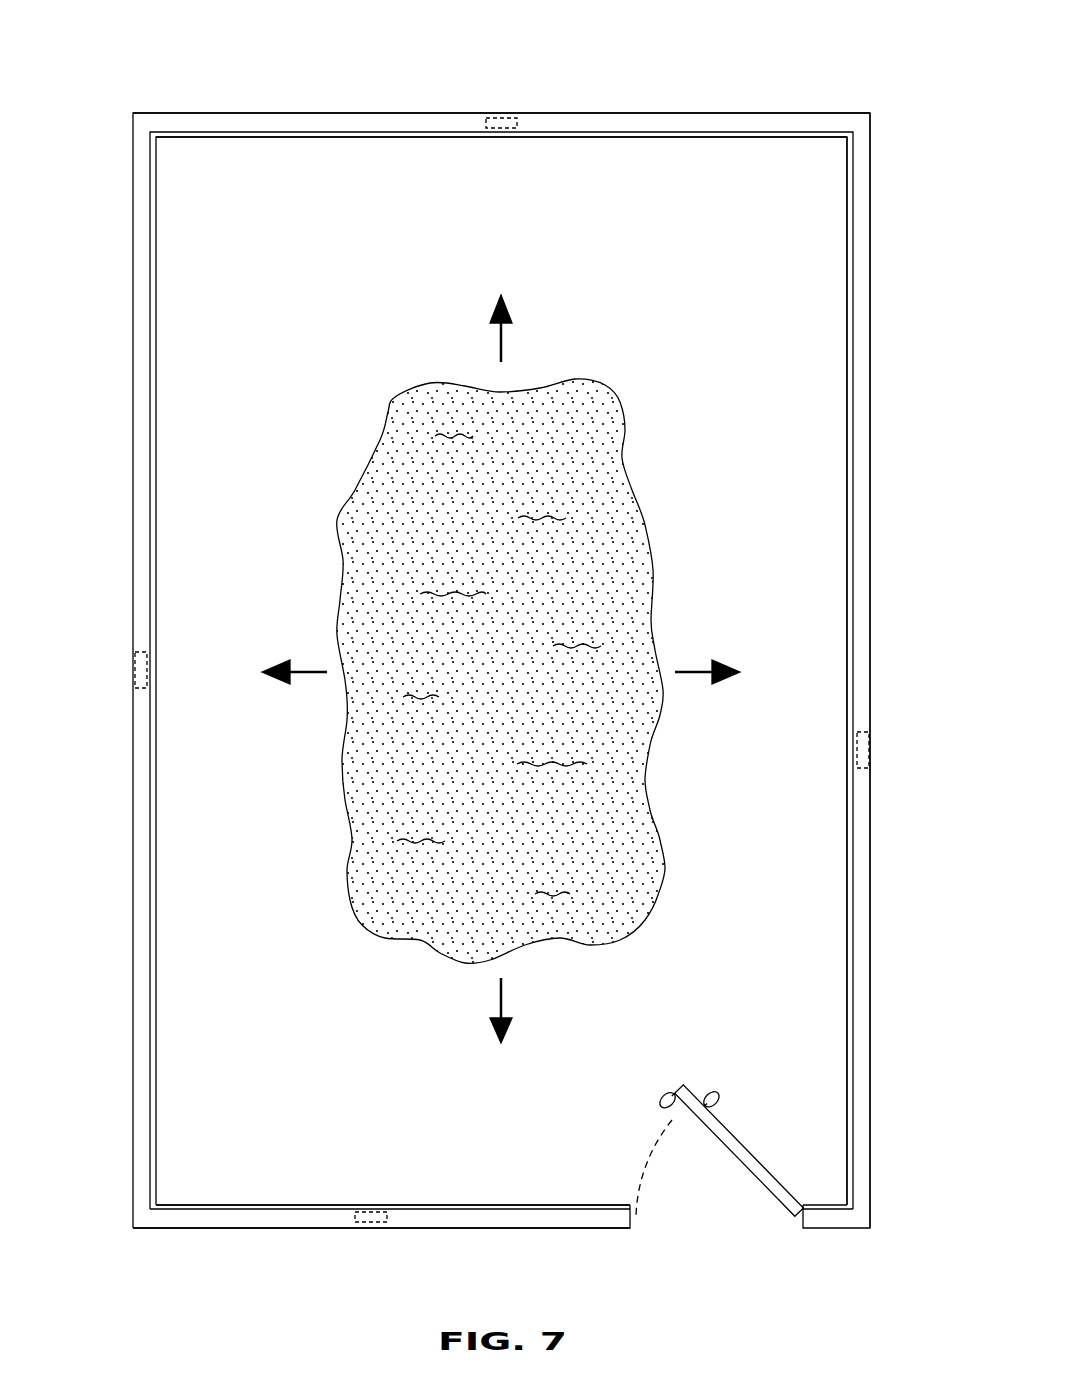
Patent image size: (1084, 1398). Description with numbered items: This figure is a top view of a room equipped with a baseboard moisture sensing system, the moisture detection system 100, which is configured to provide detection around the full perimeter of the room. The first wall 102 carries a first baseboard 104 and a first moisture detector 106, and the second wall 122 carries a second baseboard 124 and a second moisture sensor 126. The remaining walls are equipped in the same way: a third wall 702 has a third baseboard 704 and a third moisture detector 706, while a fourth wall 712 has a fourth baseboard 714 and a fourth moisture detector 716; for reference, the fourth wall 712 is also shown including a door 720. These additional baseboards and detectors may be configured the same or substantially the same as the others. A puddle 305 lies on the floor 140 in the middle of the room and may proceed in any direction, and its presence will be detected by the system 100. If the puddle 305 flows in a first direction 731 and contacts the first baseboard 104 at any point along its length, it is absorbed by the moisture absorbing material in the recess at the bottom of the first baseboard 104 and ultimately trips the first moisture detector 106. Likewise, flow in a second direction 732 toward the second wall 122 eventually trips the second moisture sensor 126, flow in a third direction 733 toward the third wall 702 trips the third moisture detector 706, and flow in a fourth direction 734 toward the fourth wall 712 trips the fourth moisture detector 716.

The moisture detection system 100 is at (362, 82).
The first wall 102 is at (142, 591).
The first baseboard 104 is at (158, 385).
The first moisture detector 106 is at (135, 672).
The second wall 122 is at (443, 123).
The second baseboard 124 is at (596, 140).
The second moisture sensor 126 is at (503, 116).
The floor 140 is at (428, 1093).
The puddle 305 is at (635, 742).
The third wall 702 is at (861, 672).
The third baseboard 704 is at (846, 437).
The third moisture detector 706 is at (868, 752).
The fourth wall 712 is at (495, 1218).
The fourth baseboard 714 is at (291, 1203).
The fourth moisture detector 716 is at (375, 1223).
The door 720 is at (728, 1152).
The first direction 731 is at (304, 670).
The second direction 732 is at (498, 341).
The third direction 733 is at (700, 670).
The fourth direction 734 is at (503, 997).